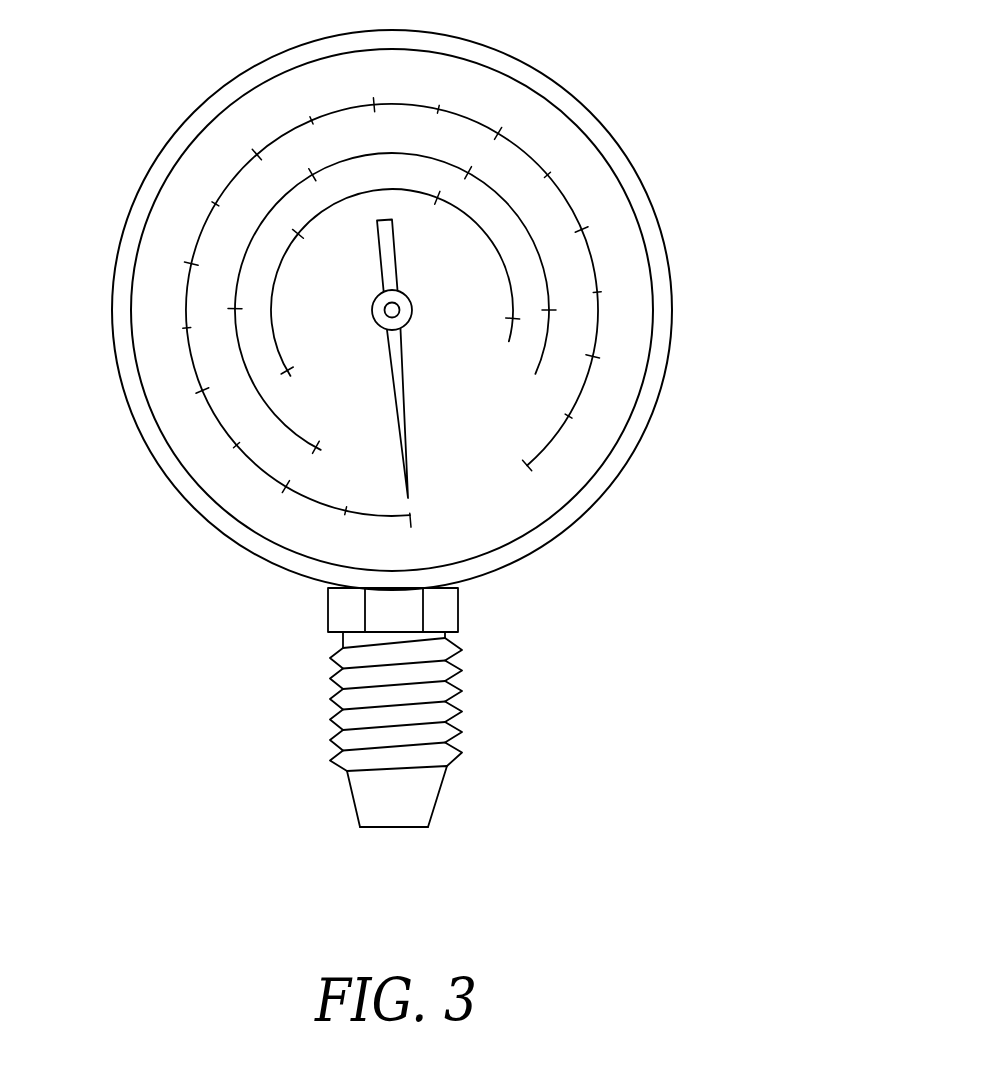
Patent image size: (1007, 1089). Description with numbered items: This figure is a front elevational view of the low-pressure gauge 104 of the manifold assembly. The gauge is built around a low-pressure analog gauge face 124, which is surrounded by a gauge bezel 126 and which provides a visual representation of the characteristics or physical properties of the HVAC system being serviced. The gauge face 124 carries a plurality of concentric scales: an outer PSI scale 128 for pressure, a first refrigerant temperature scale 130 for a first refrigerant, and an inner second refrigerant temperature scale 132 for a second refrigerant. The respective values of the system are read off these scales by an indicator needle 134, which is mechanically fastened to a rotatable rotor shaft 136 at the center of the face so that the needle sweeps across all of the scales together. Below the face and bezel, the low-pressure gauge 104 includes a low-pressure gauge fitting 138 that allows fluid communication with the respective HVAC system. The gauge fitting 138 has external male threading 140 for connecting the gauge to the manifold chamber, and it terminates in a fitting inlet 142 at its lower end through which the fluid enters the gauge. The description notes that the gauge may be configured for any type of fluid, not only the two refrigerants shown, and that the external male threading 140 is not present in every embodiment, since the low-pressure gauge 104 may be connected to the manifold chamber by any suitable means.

The low-pressure gauge 104 is at (745, 97).
The low-pressure analog gauge face 124 is at (598, 183).
The gauge bezel 126 is at (507, 63).
The PSI scale 128 is at (213, 418).
The first refrigerant temperature scale 130 is at (238, 360).
The second refrigerant temperature scale 132 is at (282, 258).
The indicator needle 134 is at (384, 282).
The rotatable rotor shaft 136 is at (400, 310).
The low-pressure gauge fitting 138 is at (447, 767).
The external male threading 140 is at (432, 677).
The fitting inlet 142 is at (375, 830).